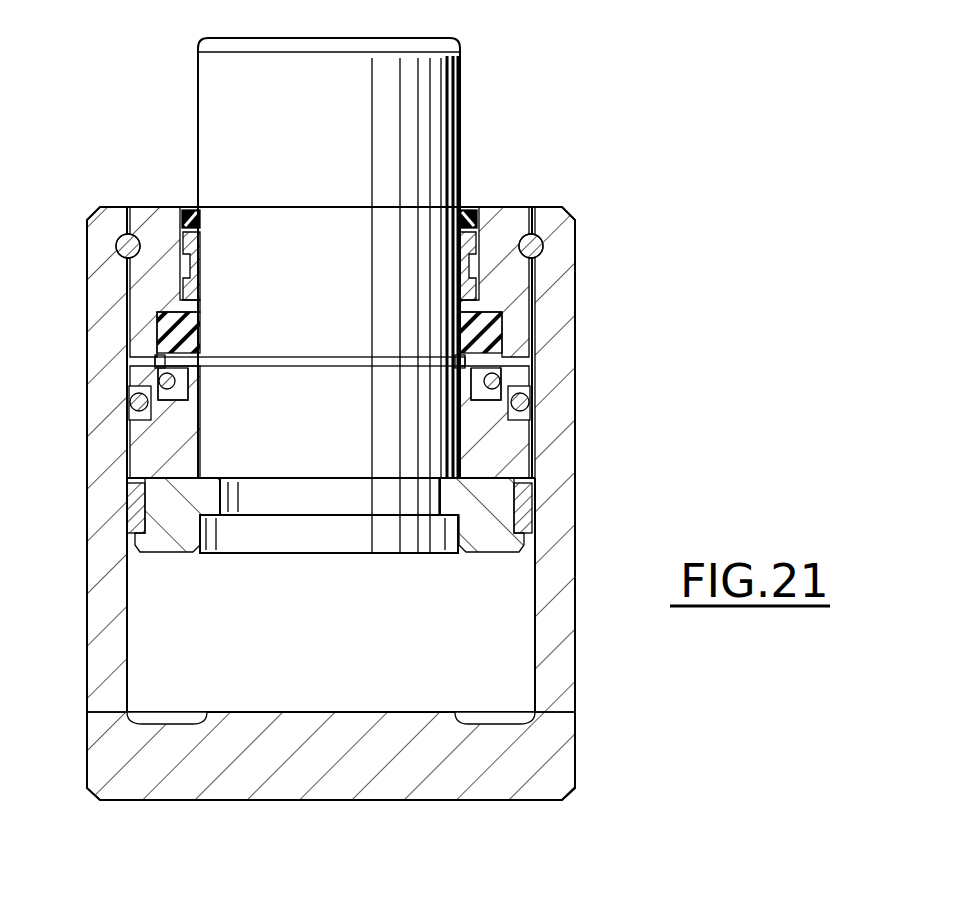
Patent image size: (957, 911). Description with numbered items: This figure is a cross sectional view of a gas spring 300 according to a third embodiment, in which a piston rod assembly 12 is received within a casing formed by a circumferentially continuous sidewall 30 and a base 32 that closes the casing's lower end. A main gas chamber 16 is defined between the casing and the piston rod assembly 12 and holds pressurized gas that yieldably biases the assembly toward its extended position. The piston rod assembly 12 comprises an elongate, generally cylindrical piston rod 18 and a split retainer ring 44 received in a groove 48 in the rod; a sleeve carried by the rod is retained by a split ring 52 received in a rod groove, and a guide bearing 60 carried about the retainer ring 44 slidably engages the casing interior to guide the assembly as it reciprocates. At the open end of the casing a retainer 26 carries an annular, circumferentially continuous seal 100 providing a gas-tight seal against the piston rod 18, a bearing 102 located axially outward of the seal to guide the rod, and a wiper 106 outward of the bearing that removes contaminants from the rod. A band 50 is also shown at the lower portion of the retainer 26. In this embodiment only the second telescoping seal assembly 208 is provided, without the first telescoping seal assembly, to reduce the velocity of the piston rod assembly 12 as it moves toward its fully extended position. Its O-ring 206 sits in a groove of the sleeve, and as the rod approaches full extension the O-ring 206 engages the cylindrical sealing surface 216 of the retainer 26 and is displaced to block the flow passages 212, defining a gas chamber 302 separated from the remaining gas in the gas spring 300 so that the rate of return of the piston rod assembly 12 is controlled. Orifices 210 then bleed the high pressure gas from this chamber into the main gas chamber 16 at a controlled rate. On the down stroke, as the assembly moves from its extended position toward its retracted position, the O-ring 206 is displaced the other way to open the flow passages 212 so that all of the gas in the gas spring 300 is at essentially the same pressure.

The piston rod 18 is at (443, 45).
The gas spring 300 is at (515, 62).
The retainer 26 is at (498, 206).
The wiper 106 is at (197, 217).
The bearing 102 is at (202, 246).
The gas chamber 302 is at (190, 331).
The split ring 52 is at (197, 357).
The seal 100 is at (497, 323).
The second telescoping seal assembly 208 is at (512, 373).
The O-ring 206 is at (503, 382).
The orifices 210 is at (186, 391).
The bearing band 50 is at (328, 365).
The flow passages 212 is at (465, 366).
The cylindrical sealing surface 216 is at (170, 407).
The sidewall 30 is at (568, 505).
The guide bearing 60 is at (537, 522).
The main gas chamber 16 is at (502, 660).
The base 32 is at (562, 777).
The groove 48 is at (338, 508).
The retainer ring 44 is at (497, 533).
The piston rod assembly 12 is at (250, 600).